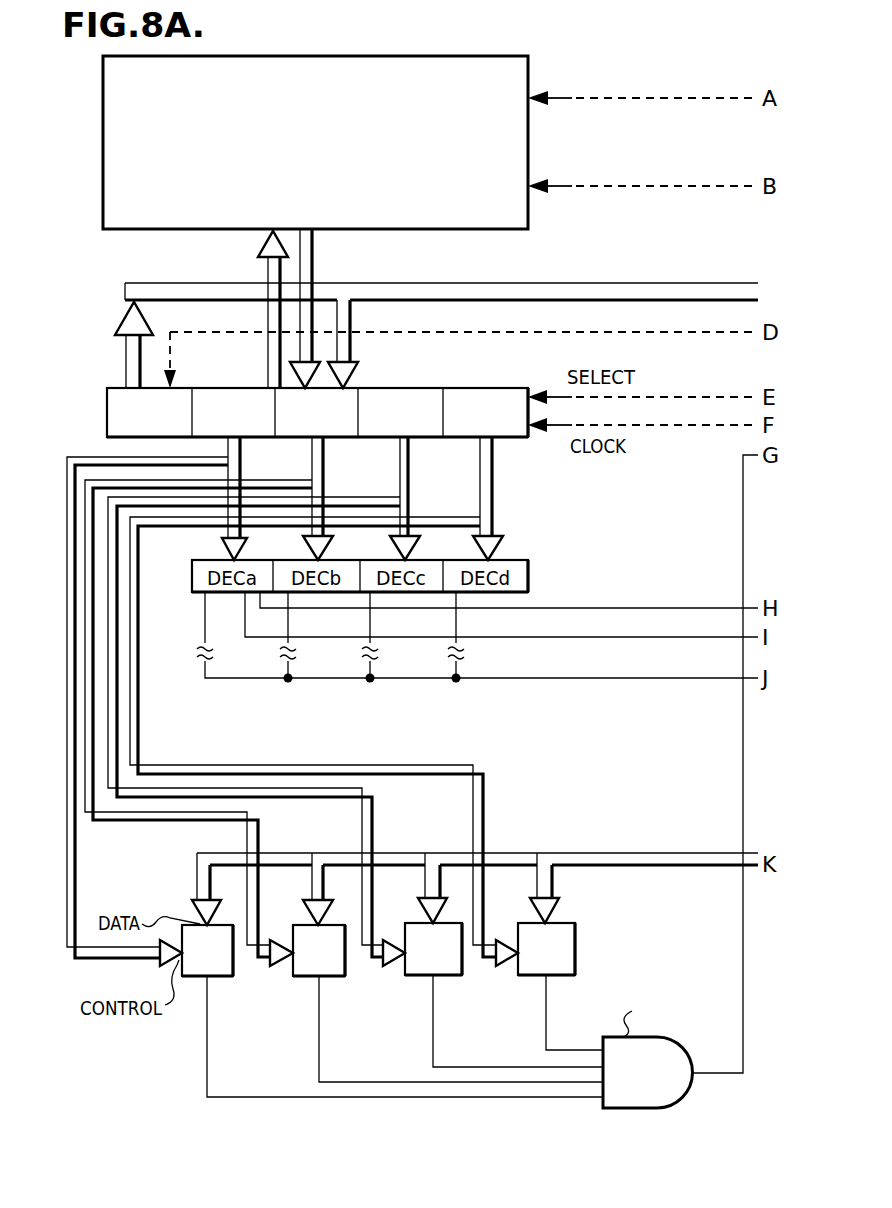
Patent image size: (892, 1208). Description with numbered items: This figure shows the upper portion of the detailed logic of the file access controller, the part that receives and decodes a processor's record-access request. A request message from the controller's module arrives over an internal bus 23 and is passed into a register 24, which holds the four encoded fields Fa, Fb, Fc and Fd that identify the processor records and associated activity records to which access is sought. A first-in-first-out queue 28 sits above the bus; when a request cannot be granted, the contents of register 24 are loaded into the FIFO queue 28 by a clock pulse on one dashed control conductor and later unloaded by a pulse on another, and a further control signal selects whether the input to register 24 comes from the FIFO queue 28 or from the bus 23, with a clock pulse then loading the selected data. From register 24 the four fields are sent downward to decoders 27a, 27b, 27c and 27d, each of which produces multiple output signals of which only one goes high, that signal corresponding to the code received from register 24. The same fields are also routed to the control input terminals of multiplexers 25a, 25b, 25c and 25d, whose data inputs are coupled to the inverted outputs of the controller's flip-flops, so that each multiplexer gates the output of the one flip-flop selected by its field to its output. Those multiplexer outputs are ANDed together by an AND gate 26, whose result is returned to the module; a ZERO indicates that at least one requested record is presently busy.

The first-in-first-out queue 28 is at (313, 106).
The internal bus 23 is at (381, 275).
The register 24 is at (358, 404).
The decoder 27a is at (254, 545).
The decoder 27b is at (340, 545).
The decoder 27c is at (424, 545).
The decoder 27d is at (509, 545).
The multiplexer 25a is at (222, 978).
The multiplexer 25b is at (334, 978).
The multiplexer 25c is at (448, 977).
The multiplexer 25d is at (561, 977).
The AND gate 26 is at (646, 1088).